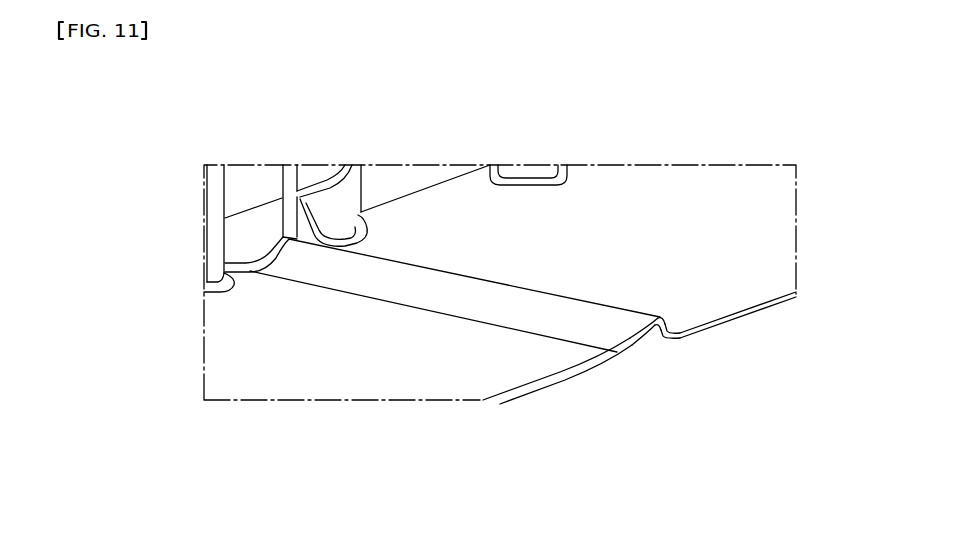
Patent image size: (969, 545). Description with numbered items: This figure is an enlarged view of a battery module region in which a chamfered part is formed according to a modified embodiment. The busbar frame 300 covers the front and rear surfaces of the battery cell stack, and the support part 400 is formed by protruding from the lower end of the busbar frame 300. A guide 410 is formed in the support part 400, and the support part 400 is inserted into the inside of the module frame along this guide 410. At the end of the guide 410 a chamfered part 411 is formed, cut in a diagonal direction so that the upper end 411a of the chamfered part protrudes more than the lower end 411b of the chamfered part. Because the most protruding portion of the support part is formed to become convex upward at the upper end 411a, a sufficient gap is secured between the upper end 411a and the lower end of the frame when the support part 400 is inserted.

The busbar frame 300 is at (315, 173).
The support part 400 is at (305, 382).
The guide 410 is at (570, 312).
The chamfered part 411 is at (650, 342).
The upper end of the chamfered part 411a is at (642, 315).
The lower end of the chamfered part 411b is at (627, 343).